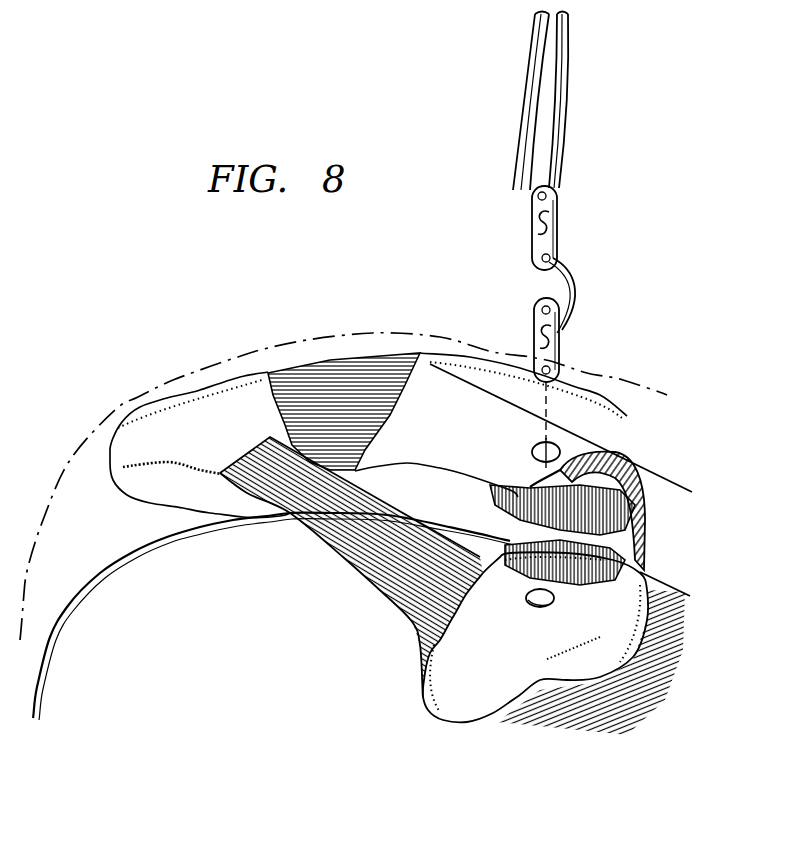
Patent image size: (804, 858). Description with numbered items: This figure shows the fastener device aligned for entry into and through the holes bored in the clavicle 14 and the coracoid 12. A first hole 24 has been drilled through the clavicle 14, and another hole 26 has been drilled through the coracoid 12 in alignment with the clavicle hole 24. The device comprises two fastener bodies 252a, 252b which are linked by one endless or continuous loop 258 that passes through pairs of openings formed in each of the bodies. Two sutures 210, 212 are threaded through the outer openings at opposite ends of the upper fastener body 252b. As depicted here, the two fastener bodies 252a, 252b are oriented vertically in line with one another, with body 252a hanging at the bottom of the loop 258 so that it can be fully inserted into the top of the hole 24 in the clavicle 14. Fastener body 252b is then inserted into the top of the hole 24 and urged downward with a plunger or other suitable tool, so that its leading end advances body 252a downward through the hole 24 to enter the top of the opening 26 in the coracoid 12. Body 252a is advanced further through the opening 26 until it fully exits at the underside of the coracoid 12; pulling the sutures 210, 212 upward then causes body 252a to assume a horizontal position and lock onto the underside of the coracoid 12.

The suture 212 is at (536, 100).
The suture 210 is at (562, 75).
The fastener body 252b is at (559, 208).
The continuous loop 258 is at (580, 287).
The fastener body 252a is at (560, 352).
The hole 24 is at (555, 448).
The clavicle 14 is at (602, 446).
The hole 26 is at (532, 601).
The coracoid 12 is at (439, 700).